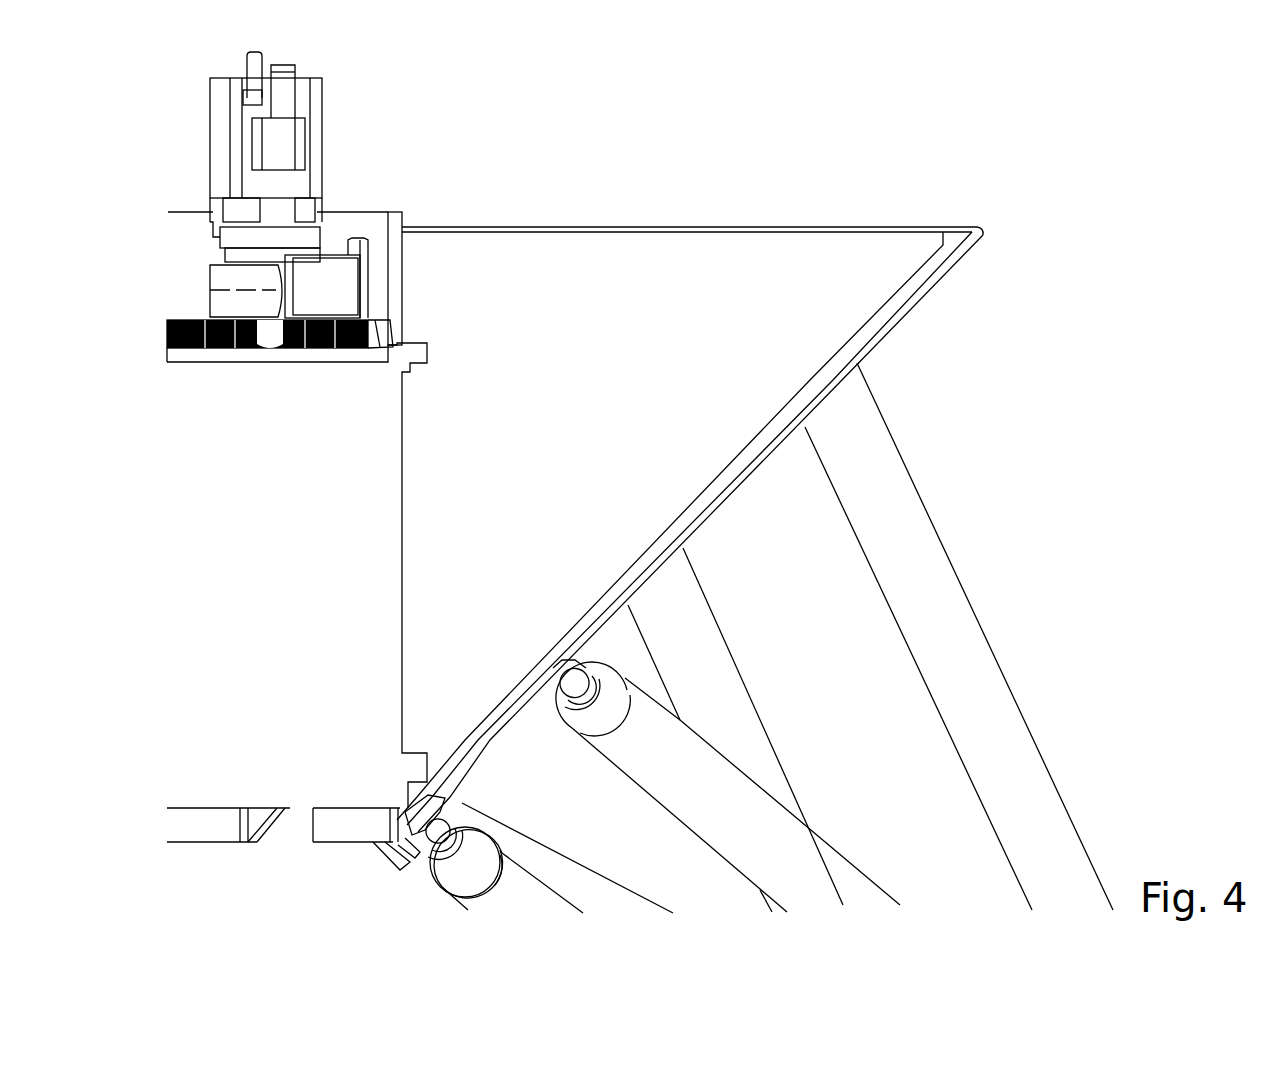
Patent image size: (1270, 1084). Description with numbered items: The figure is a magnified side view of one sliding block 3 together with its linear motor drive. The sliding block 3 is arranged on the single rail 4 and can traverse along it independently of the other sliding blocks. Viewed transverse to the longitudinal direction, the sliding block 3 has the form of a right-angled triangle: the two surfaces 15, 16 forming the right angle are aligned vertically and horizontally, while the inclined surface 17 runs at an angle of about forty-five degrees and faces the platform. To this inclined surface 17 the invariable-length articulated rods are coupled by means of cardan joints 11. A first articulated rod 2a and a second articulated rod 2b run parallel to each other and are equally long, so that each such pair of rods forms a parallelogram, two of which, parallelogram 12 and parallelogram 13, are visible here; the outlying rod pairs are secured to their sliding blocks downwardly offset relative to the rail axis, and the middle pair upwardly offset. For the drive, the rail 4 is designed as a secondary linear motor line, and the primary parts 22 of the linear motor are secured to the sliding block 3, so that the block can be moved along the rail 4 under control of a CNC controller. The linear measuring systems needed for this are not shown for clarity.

The first articulated rod 2a is at (1000, 697).
The second articulated rod 2b is at (773, 780).
The sliding block 3 is at (615, 447).
The rail 4 is at (282, 612).
The cardan joint 11 is at (428, 880).
The parallelogram 12 is at (695, 805).
The parallelogram 13 is at (912, 607).
The vertical surface of sliding block 15 is at (383, 247).
The horizontal surface of sliding block 16 is at (543, 232).
The inclined surface of sliding block 17 is at (918, 300).
The primary parts of linear motor 22 is at (326, 168).